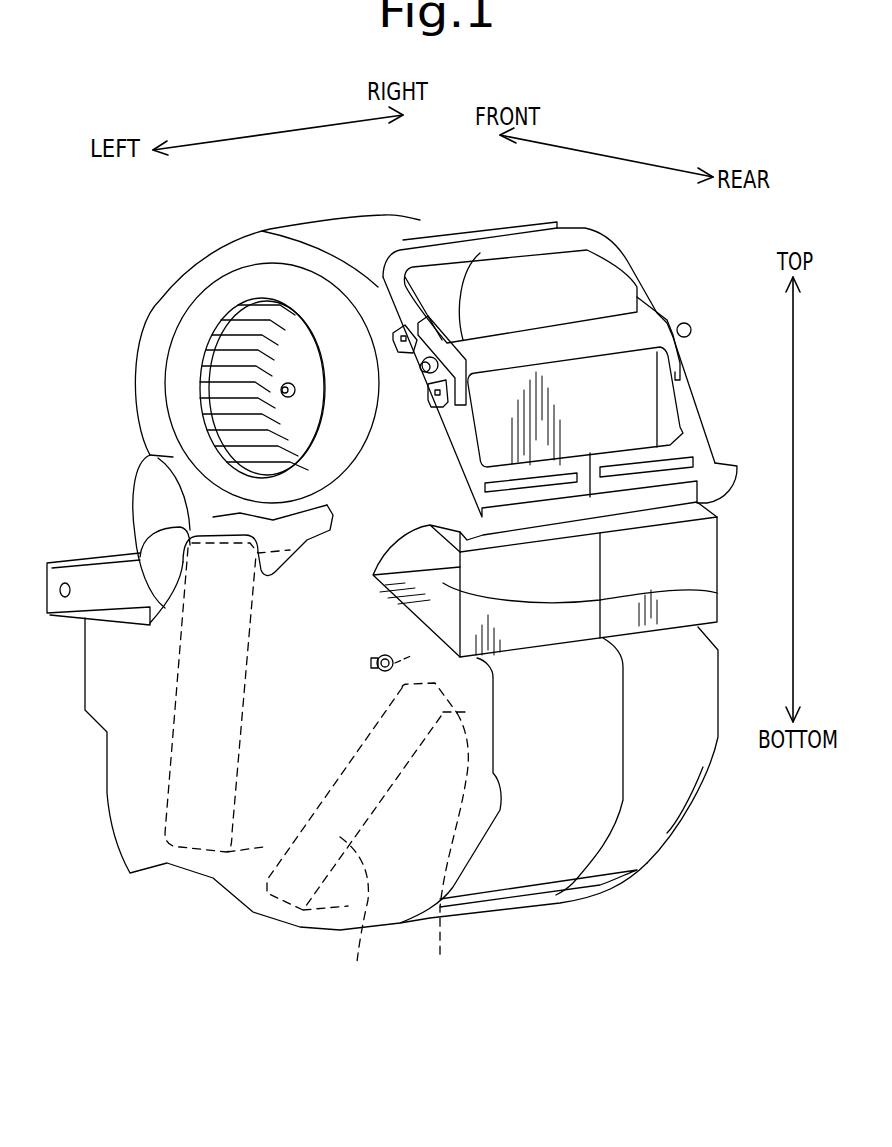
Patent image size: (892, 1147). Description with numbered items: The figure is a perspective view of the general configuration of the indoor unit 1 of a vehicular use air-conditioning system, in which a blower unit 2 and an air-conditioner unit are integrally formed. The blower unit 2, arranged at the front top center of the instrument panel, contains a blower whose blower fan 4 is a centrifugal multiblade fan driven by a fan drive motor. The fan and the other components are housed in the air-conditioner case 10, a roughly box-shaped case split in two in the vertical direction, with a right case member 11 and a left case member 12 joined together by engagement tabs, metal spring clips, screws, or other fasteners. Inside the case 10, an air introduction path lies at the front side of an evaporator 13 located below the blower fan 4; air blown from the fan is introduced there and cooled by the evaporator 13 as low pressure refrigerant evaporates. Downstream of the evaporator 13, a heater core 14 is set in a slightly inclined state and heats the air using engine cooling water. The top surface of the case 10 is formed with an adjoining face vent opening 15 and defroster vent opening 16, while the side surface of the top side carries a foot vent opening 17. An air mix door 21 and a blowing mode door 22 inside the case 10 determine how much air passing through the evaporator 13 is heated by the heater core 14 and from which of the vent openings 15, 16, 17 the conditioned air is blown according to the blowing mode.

The indoor unit 1 is at (113, 228).
The blower unit 2 is at (200, 230).
The blower fan 4 is at (203, 380).
The air-conditioner case 10 is at (692, 686).
The right case member 11 is at (667, 763).
The left case member 12 is at (684, 836).
The evaporator 13 is at (193, 785).
The heater core 14 is at (367, 839).
The face vent opening 15 is at (663, 413).
The defroster vent opening 16 is at (598, 280).
The foot vent opening 17 is at (718, 567).
The air mix door 21 is at (449, 854).
The blowing mode door 22 is at (633, 380).